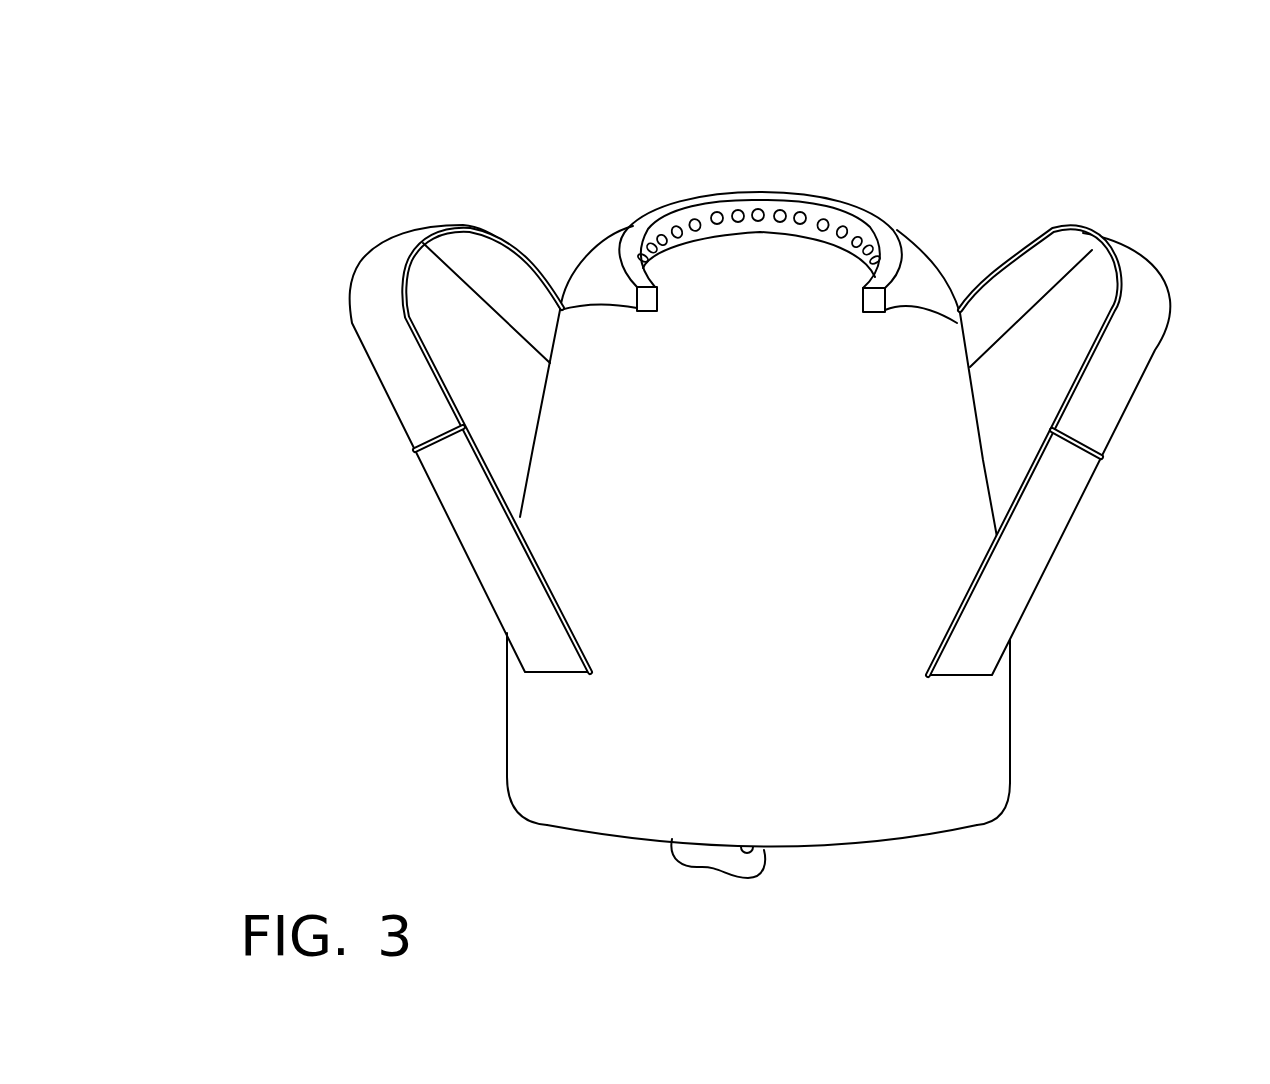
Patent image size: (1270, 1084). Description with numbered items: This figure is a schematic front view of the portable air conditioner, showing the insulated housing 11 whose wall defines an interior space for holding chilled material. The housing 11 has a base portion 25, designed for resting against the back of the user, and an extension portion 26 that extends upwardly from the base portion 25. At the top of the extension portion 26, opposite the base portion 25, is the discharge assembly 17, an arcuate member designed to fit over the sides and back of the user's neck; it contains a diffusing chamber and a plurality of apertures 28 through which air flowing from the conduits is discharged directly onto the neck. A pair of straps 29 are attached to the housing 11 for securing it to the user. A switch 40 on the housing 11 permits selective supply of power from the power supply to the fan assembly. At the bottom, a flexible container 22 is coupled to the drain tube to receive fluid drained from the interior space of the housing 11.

The insulated housing 11 is at (1010, 783).
The discharge assembly 17 is at (828, 172).
The flexible container 22 is at (720, 863).
The base portion 25 is at (873, 810).
The extension portion 26 is at (630, 480).
The apertures 28 is at (718, 218).
The straps 29 is at (385, 267).
The switch 40 is at (1010, 688).